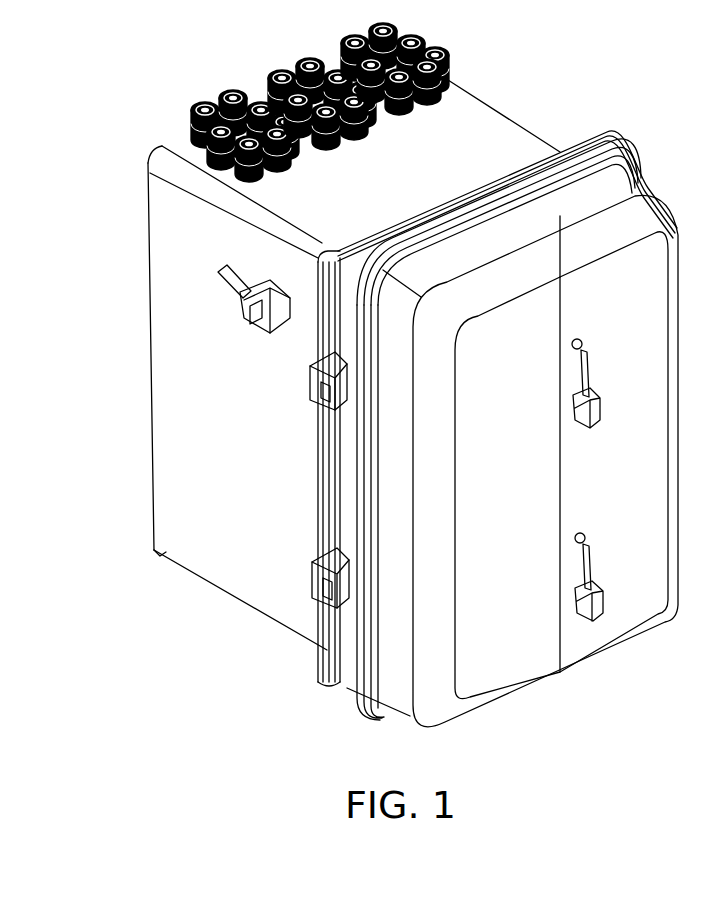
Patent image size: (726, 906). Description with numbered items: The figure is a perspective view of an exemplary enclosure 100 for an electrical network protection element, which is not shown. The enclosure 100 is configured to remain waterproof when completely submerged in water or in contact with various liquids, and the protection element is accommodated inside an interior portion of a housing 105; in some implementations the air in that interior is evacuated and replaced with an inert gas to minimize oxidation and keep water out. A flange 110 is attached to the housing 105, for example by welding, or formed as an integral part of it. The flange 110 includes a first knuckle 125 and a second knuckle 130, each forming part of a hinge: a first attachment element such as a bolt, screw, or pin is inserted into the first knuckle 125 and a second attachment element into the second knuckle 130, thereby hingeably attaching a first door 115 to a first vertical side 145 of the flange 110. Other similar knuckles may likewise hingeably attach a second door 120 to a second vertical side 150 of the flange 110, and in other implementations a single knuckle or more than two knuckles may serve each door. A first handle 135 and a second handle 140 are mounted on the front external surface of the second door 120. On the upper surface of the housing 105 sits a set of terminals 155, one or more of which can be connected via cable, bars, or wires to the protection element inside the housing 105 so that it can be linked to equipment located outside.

The enclosure 100 is at (103, 678).
The housing 105 is at (231, 442).
The flange 110 is at (380, 220).
The first door 115 is at (523, 474).
The second door 120 is at (632, 504).
The first knuckle 125 is at (312, 390).
The second knuckle 130 is at (313, 578).
The first handle 135 is at (592, 376).
The second handle 140 is at (597, 572).
The first vertical side 145 is at (316, 478).
The second vertical side 150 is at (657, 180).
The set of terminals 155 is at (462, 74).